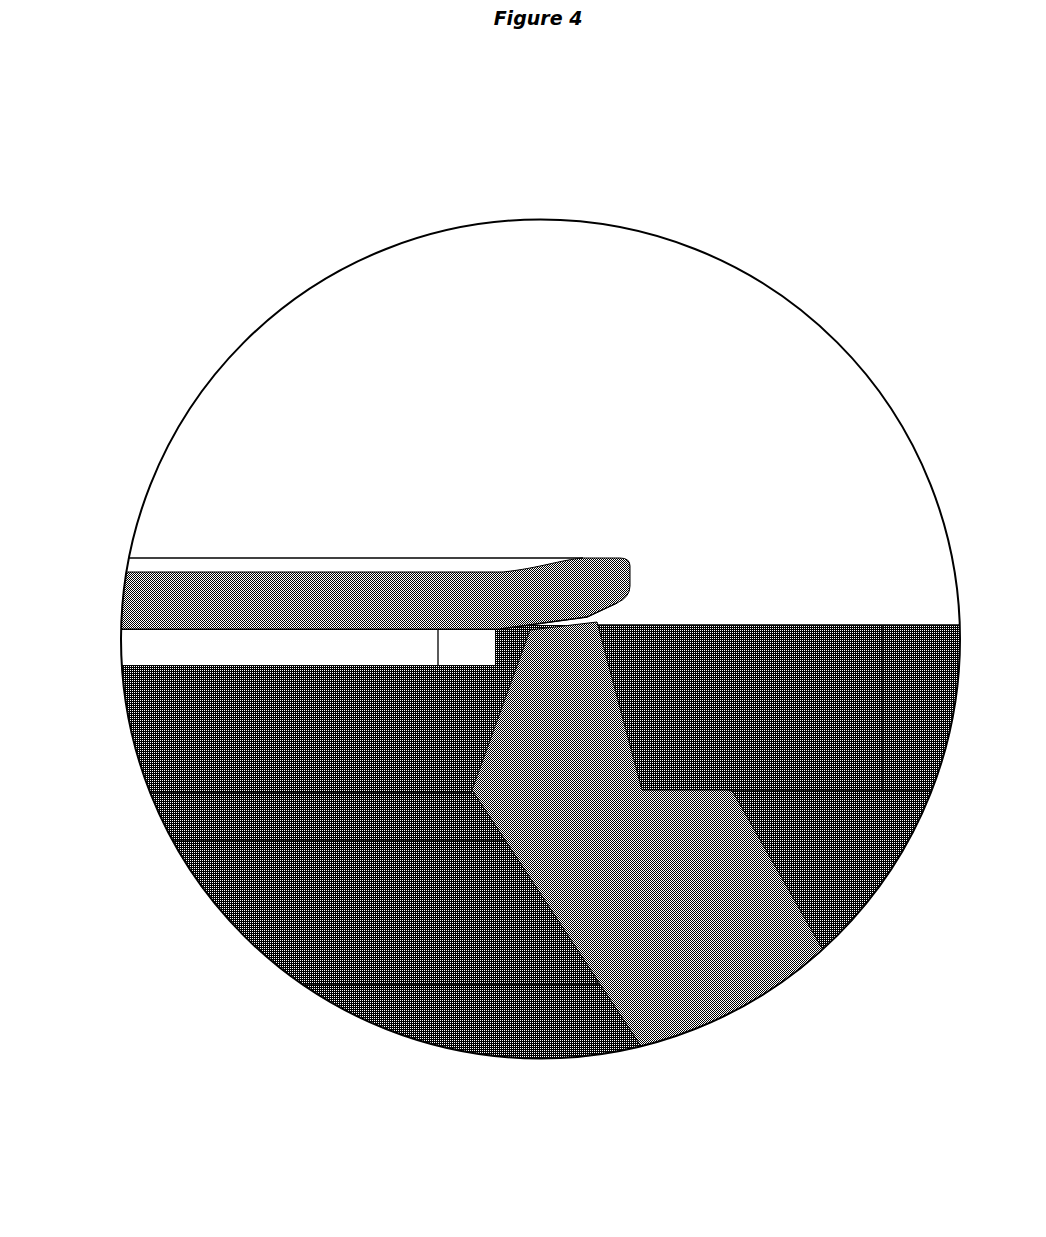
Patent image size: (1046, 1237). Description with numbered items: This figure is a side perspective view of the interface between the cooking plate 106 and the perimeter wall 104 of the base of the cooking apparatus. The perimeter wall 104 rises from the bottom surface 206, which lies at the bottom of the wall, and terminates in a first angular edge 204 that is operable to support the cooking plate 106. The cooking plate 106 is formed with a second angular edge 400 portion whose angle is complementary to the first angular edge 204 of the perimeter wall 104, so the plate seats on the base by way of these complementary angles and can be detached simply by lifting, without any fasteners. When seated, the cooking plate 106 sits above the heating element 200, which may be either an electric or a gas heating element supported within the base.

The perimeter wall 104 is at (683, 940).
The cooking plate 106 is at (353, 592).
The heating element 200 is at (252, 658).
The first angular edge 204 is at (580, 632).
The bottom surface 206 is at (263, 815).
The second angular edge 400 is at (575, 608).